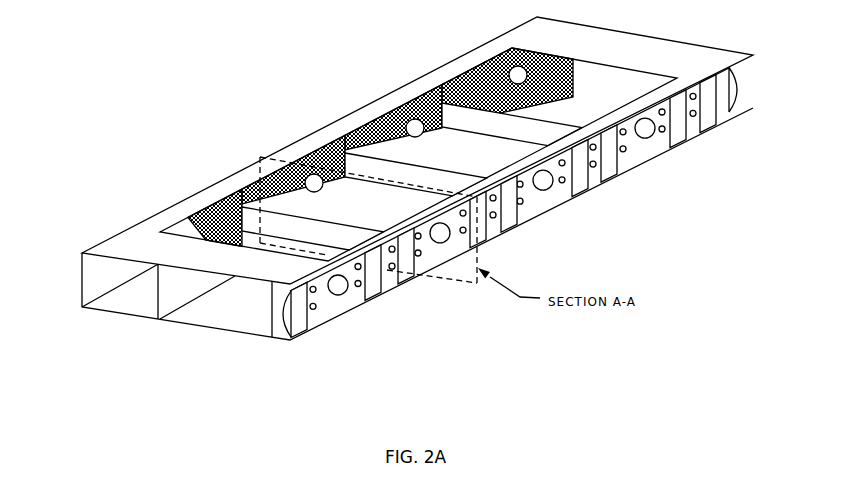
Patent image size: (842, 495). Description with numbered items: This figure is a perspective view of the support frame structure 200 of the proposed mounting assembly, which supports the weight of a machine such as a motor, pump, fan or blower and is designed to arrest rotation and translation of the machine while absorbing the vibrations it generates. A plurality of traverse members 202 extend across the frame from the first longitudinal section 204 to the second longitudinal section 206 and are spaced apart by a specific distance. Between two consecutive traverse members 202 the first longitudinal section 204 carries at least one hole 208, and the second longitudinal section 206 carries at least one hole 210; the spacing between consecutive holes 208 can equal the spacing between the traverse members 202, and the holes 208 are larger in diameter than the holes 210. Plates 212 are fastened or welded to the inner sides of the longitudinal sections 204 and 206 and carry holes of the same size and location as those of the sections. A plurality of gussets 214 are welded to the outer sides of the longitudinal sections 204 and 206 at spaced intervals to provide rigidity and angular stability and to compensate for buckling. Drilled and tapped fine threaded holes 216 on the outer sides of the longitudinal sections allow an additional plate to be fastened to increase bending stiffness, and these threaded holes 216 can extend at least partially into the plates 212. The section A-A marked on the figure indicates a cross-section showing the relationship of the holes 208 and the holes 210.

The support frame structure 200 is at (111, 48).
The traverse members 202 is at (352, 152).
The first longitudinal section 204 is at (333, 110).
The second longitudinal section 206 is at (669, 165).
The holes 208 is at (518, 78).
The holes 210 is at (643, 132).
The plates 212 is at (203, 227).
The gussets 214 is at (406, 286).
The drilled and tapped fine threaded holes 216 is at (308, 302).